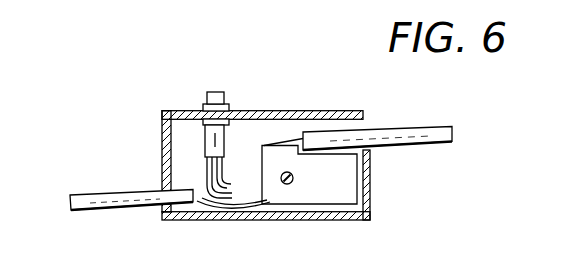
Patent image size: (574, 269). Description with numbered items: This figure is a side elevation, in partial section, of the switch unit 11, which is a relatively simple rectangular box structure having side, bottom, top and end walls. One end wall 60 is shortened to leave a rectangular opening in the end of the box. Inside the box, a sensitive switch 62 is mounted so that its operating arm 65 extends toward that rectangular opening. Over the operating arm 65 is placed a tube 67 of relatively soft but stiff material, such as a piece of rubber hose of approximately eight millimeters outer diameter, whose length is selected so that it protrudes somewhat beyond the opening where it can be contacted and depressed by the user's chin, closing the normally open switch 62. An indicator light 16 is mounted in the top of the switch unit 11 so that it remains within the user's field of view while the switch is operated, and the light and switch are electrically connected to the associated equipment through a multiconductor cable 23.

The switch unit 11 is at (362, 220).
The indicator light 16 is at (222, 92).
The multiconductor cable 23 is at (111, 190).
The end wall 60 is at (371, 161).
The sensitive switch 62 is at (285, 205).
The operating arm 65 is at (298, 140).
The tube 67 is at (427, 126).